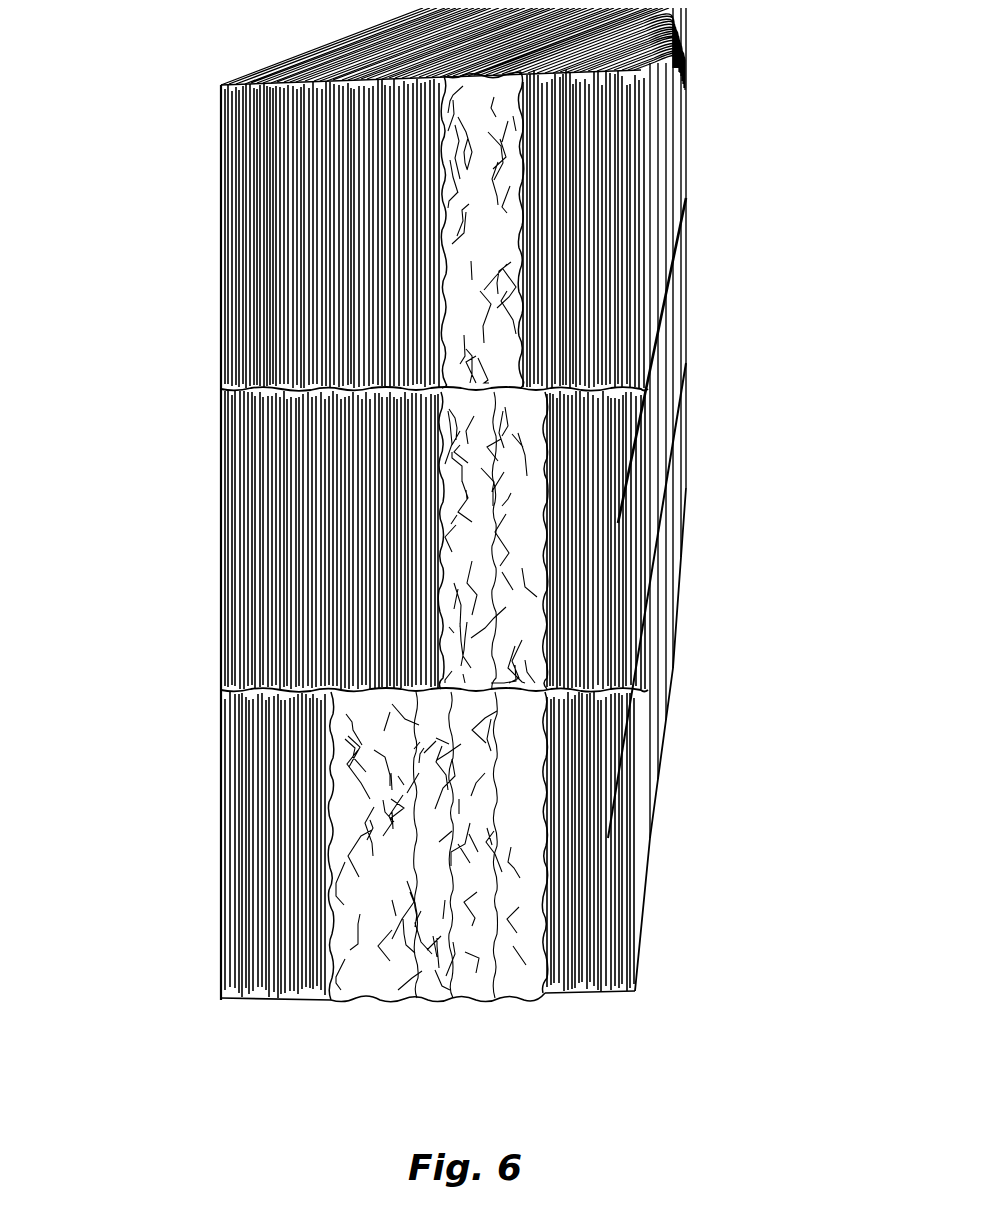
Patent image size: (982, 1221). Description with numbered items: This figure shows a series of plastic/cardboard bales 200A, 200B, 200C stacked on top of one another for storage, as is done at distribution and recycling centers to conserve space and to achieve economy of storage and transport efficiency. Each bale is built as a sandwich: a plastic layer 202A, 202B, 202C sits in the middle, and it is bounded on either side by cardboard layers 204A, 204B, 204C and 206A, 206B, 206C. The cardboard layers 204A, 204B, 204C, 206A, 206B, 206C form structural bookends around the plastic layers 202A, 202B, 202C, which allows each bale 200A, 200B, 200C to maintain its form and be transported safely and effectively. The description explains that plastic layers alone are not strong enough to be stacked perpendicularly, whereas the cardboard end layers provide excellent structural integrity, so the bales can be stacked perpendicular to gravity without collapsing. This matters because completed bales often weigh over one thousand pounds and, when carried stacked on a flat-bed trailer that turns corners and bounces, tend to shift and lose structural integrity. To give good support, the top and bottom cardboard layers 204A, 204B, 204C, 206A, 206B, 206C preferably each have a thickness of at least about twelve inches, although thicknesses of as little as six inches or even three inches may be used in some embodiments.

The plastic/cardboard bale 200A is at (450, 504).
The plastic/cardboard bale 200B is at (454, 525).
The plastic/cardboard bale 200C is at (451, 837).
The plastic layer 202A is at (499, 231).
The plastic layer 202B is at (512, 534).
The plastic layer 202C is at (452, 852).
The cardboard layer 204A is at (218, 150).
The cardboard layer 204B is at (240, 500).
The cardboard layer 204C is at (218, 787).
The cardboard layer 206A is at (600, 155).
The cardboard layer 206B is at (585, 500).
The cardboard layer 206C is at (585, 800).